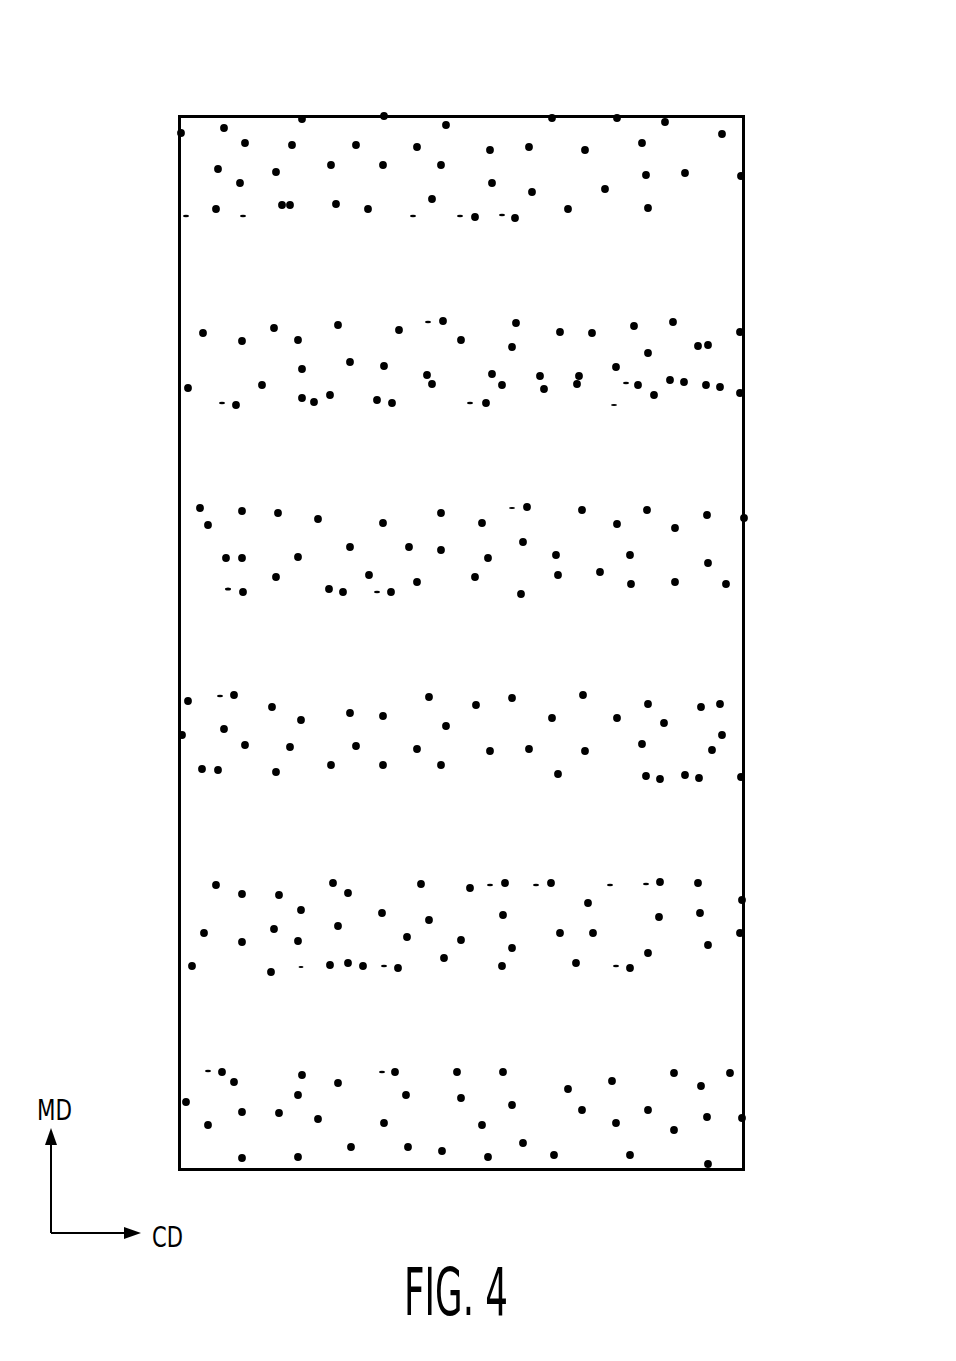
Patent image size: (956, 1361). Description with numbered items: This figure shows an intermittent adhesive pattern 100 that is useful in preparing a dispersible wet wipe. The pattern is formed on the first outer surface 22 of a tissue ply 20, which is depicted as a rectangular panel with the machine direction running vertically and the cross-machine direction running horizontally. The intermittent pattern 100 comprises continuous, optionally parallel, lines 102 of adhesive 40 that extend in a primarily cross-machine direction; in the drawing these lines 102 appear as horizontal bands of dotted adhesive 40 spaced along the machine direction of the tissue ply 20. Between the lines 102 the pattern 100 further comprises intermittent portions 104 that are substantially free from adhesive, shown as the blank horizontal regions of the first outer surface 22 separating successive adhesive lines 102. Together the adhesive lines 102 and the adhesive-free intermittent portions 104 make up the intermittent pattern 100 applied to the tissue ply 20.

The tissue ply 20 is at (474, 80).
The first outer surface 22 is at (214, 267).
The adhesive 40 is at (277, 388).
The intermittent pattern 100 is at (270, 597).
The lines of adhesive 102 is at (654, 222).
The intermittent portions 104 is at (697, 448).